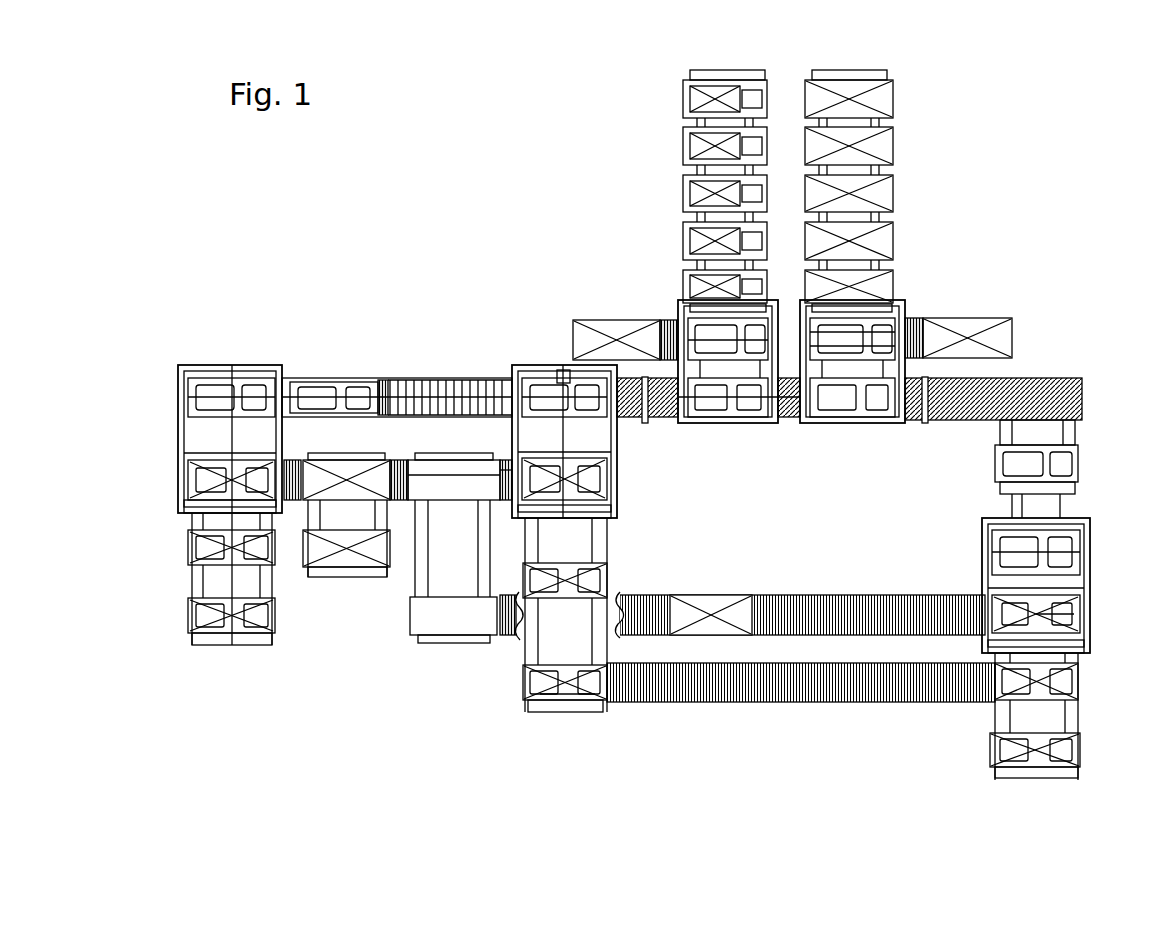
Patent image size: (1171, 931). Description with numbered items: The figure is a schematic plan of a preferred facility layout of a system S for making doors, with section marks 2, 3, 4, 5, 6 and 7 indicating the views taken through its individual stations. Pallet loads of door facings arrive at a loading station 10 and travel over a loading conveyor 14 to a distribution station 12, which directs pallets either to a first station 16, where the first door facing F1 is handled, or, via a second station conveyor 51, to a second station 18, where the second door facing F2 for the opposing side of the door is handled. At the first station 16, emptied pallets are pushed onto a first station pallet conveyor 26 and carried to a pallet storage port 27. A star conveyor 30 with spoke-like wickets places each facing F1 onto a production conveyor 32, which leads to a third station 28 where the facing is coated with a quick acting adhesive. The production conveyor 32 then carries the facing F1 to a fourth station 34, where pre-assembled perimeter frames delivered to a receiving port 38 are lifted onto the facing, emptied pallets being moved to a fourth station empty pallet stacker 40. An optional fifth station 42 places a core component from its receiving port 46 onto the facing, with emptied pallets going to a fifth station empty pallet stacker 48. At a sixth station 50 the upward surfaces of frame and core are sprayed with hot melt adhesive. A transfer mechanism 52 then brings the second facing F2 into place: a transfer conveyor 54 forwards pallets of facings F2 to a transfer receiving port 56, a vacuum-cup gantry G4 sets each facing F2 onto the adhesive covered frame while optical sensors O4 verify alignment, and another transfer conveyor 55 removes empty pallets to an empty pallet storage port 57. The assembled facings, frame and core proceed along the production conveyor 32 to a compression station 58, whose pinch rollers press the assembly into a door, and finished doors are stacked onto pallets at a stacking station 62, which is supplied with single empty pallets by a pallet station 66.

The system S is at (521, 203).
The section line 2- 2 is at (1048, 797).
The section line 3- 3 is at (870, 455).
The section line 4- 4 is at (746, 47).
The section line 5 is at (289, 366).
The section line 6- 6 is at (218, 672).
The section line 7- 7 is at (337, 590).
The loading station 10 is at (1084, 750).
The distribution station 12 is at (1084, 683).
The loading conveyor 14 is at (1058, 717).
The first station 16 is at (1100, 585).
The second station 18 is at (530, 716).
The first station pallet conveyor 26 is at (862, 598).
The pallet storage port 27 is at (456, 625).
The third station 28 is at (926, 424).
The star conveyor 30 is at (1082, 464).
The production conveyor 32 is at (792, 424).
The fourth station 34 is at (846, 430).
The receiving port 38 is at (895, 304).
The fourth station empty pallet stacker 40 is at (963, 316).
The fifth station 42 is at (676, 304).
The receiving port 46 is at (684, 306).
The fifth station empty pallet stacker 48 is at (611, 326).
The sixth station 50 is at (645, 423).
The second station conveyor 51 is at (782, 702).
The transfer mechanism 52 is at (615, 578).
The transfer conveyor 54 is at (590, 538).
The transfer conveyor 55 is at (500, 492).
The transfer receiving port 56 is at (495, 472).
The empty pallet storage port 57 is at (443, 492).
The compression station 58 is at (452, 364).
The stacking station 62 is at (266, 353).
The pallet station 66 is at (353, 582).
The first door facing F1 is at (1078, 615).
The second door facing F2 is at (567, 702).
The gantry G4 is at (630, 480).
The optical sensors O4 is at (563, 370).